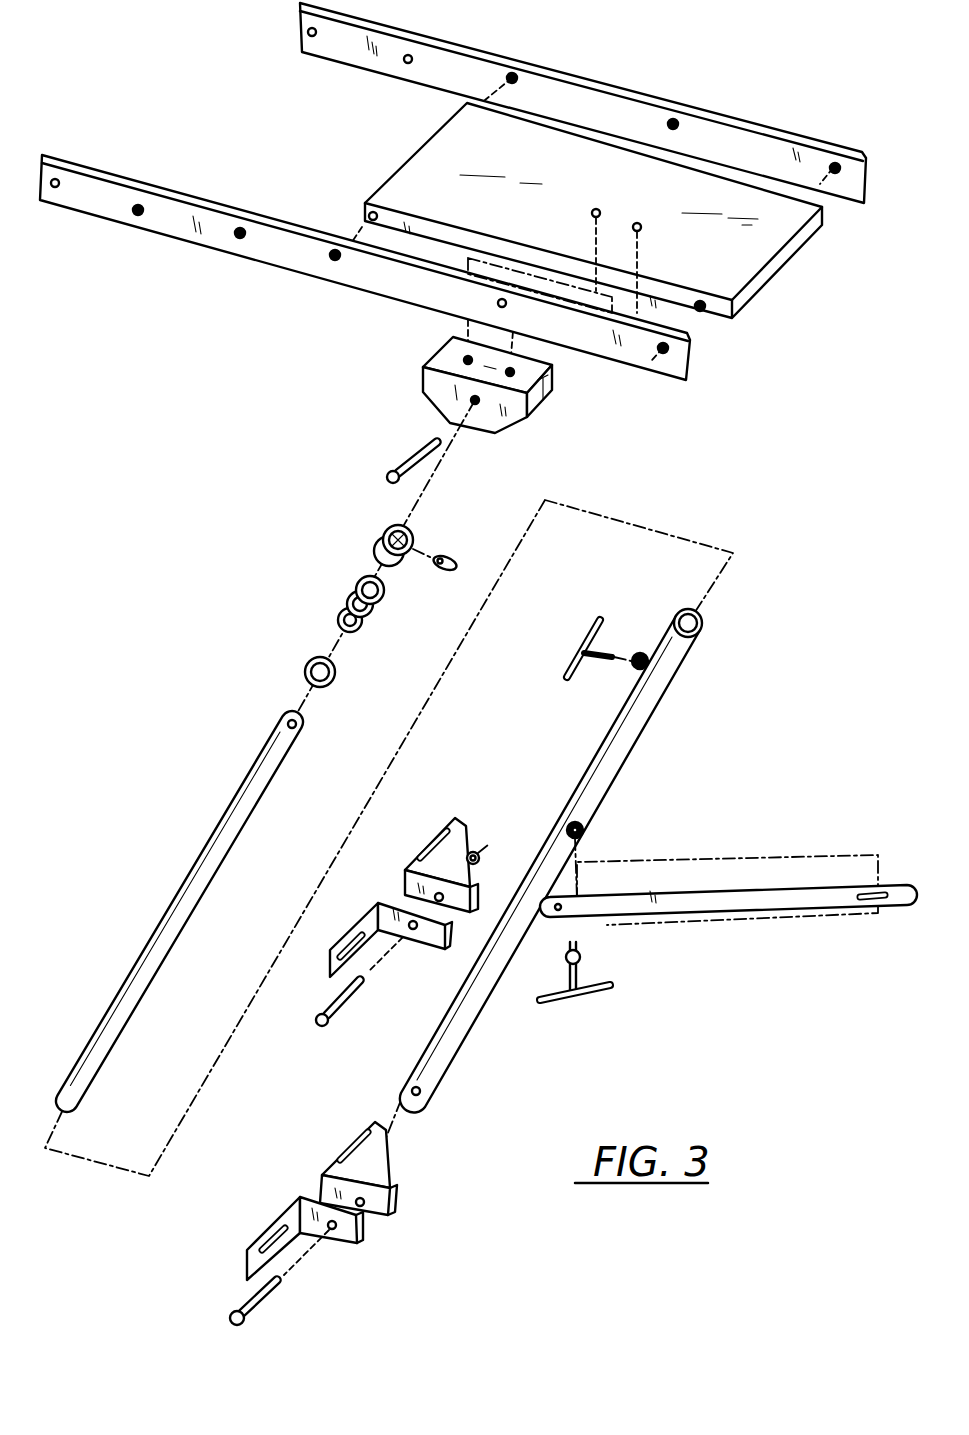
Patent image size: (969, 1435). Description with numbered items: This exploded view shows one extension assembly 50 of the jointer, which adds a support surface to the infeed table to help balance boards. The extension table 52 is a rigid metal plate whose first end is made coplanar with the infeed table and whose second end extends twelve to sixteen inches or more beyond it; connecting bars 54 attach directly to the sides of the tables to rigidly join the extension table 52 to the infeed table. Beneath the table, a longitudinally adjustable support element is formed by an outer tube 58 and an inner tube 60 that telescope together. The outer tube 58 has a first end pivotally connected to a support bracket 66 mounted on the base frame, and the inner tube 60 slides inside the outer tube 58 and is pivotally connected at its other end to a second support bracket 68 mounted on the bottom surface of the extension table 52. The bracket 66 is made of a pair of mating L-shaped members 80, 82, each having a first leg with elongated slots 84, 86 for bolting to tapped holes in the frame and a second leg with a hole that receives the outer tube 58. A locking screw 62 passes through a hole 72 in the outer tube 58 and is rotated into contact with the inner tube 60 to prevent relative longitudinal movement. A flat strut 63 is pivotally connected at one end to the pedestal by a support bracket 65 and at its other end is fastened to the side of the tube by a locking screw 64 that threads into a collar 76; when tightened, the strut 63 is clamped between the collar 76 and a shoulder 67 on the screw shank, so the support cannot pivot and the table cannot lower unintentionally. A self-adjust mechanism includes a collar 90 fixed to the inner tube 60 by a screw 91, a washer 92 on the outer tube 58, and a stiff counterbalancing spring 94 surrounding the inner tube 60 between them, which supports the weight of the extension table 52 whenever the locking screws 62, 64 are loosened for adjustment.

The extension assembly 50 is at (393, 338).
The extension table 52 is at (765, 272).
The connecting bar 54 is at (787, 128).
The outer tube 58 is at (653, 713).
The inner tube 60 is at (253, 776).
The locking screw 62 is at (592, 632).
The flat strut 63 is at (820, 897).
The locking screw 64 is at (590, 993).
The support bracket 65 is at (427, 950).
The support bracket 66 is at (373, 1201).
The shoulder 67 is at (583, 957).
The second support bracket 68 is at (450, 388).
The hole 72 is at (640, 652).
The collar 76 is at (580, 823).
The L-shaped member 80 is at (357, 1247).
The L-shaped member 82 is at (393, 1200).
The elongated slot 84 is at (275, 1233).
The elongated slot 86 is at (362, 1137).
The collar 90 is at (380, 540).
The screw 91 is at (453, 558).
The washer 92 is at (308, 667).
The counterbalancing spring 94 is at (355, 590).